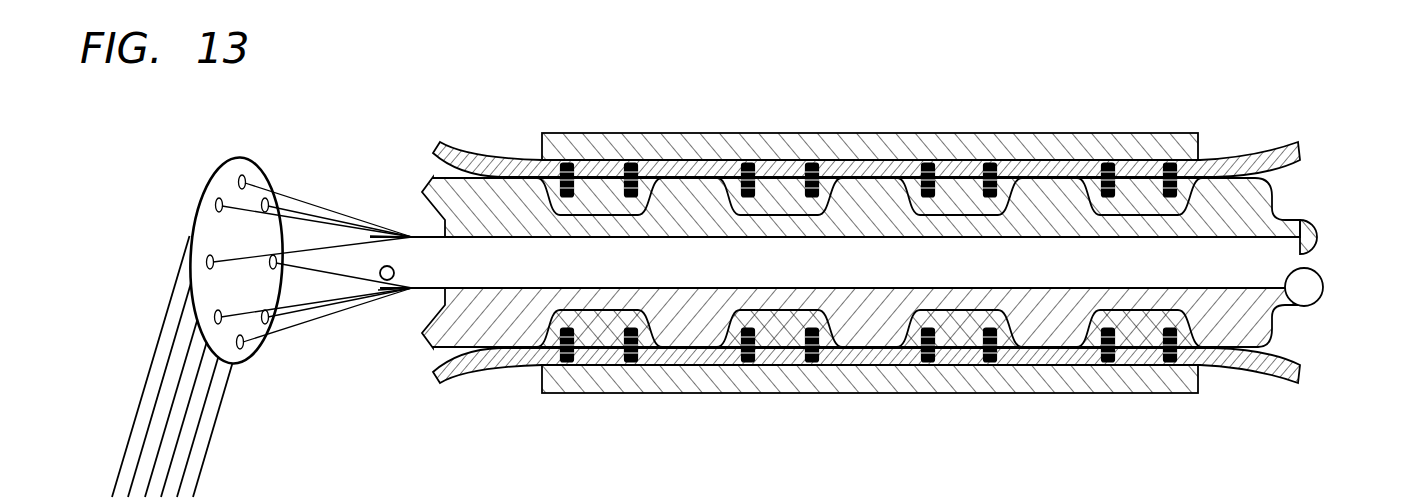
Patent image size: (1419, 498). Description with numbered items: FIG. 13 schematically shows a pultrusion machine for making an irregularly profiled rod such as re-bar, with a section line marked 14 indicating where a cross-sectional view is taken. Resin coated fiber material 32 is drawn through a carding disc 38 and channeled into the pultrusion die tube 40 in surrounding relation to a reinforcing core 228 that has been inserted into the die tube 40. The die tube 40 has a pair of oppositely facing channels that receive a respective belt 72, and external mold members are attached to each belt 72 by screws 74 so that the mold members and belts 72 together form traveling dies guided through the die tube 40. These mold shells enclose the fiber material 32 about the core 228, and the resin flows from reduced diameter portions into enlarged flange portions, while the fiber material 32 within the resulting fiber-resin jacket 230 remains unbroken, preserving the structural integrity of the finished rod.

The fiber material 32 is at (213, 434).
The carding disc 38 is at (230, 158).
The pultrusion die tube 40 is at (1090, 133).
The belt 72 is at (1270, 150).
The screws 74 is at (1166, 364).
The reinforcing core 228 is at (1306, 250).
The fiber-resin jacket 230 is at (433, 321).
The section line for FIG. 14 is at (995, 108).